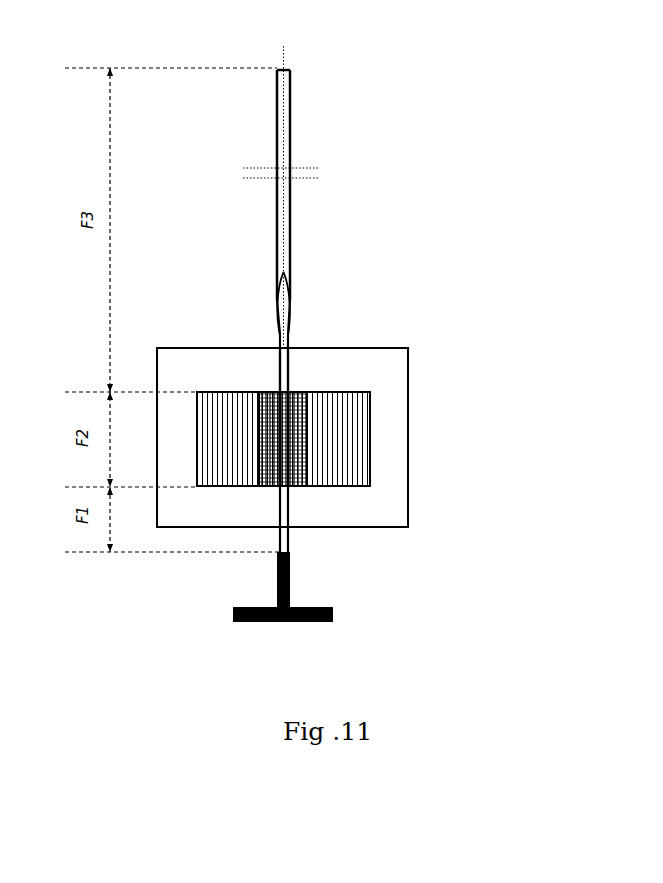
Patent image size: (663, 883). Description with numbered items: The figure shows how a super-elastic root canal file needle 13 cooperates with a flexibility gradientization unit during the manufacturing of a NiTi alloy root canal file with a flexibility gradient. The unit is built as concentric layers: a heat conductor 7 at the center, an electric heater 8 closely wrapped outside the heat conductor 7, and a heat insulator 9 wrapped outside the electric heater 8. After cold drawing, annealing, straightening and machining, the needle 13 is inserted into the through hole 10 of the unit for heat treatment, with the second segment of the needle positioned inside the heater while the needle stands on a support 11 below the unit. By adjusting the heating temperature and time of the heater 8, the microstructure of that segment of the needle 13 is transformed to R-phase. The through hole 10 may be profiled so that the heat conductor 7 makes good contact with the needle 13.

The heat conductor 7 is at (301, 448).
The electric heater 8 is at (340, 475).
The heat insulator 9 is at (338, 515).
The through hole 10 is at (288, 380).
The base 11 is at (290, 577).
The super-elastic root canal file needle 13 is at (290, 127).